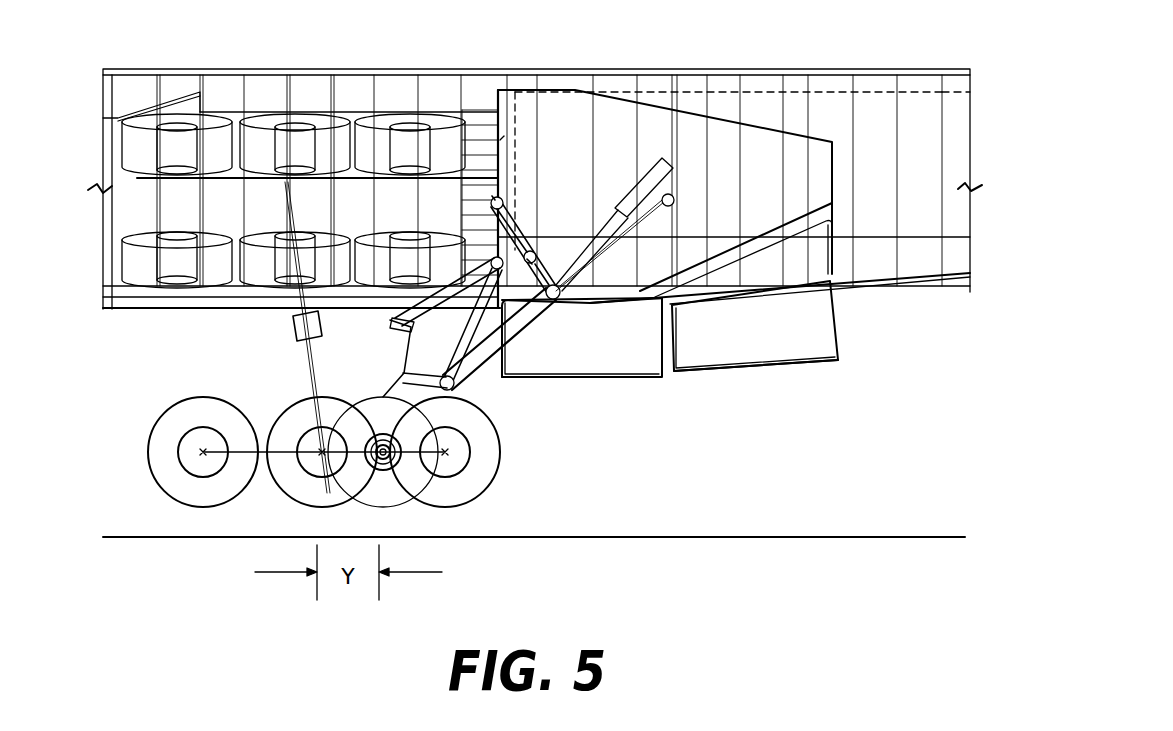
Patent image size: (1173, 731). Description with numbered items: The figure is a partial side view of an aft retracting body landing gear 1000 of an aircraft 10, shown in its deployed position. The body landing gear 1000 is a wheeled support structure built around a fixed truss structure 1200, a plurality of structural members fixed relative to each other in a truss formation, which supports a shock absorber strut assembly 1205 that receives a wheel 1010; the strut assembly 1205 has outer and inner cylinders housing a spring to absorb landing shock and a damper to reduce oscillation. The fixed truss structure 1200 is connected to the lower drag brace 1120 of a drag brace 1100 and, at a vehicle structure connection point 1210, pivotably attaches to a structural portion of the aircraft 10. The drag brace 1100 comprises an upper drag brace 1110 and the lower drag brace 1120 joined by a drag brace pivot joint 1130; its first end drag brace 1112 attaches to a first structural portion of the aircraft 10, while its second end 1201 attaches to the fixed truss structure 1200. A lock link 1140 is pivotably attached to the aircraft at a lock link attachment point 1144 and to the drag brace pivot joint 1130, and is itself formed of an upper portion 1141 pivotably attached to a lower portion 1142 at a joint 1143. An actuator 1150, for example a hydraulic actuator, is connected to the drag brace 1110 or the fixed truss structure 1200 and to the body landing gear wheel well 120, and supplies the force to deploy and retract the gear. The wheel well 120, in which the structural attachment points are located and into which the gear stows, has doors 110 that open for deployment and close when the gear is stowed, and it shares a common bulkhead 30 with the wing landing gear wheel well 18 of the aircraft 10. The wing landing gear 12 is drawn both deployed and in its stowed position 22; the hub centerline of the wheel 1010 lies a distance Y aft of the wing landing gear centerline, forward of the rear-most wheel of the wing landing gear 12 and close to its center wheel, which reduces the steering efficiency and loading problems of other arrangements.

The aircraft 10 is at (956, 92).
The wing landing gear 12 is at (268, 135).
The wing landing gear wheel well 18 is at (128, 204).
The stowed position 22 is at (305, 140).
The common bulkhead 30 is at (516, 78).
The doors 110 is at (598, 365).
The body landing gear wheel well 120 is at (742, 143).
The body landing gear 1000 is at (477, 362).
The wheel 1010 is at (403, 500).
The drag brace 1100 is at (532, 323).
The upper drag brace 1110 is at (652, 215).
The first end drag brace 1112 is at (672, 192).
The lower drag brace 1120 is at (520, 333).
The drag brace pivot joint 1130 is at (573, 318).
The lock link 1140 is at (503, 136).
The upper portion 1141 is at (517, 235).
The lower portion 1142 is at (560, 265).
The joint 1143 is at (537, 248).
The lock link attachment point 1144 is at (495, 200).
The actuator 1150 is at (657, 150).
The fixed truss structure 1200 is at (392, 363).
The second end 1201 is at (400, 380).
The shock absorber strut assembly 1205 is at (390, 327).
The vehicle structure connection point 1210 is at (497, 260).